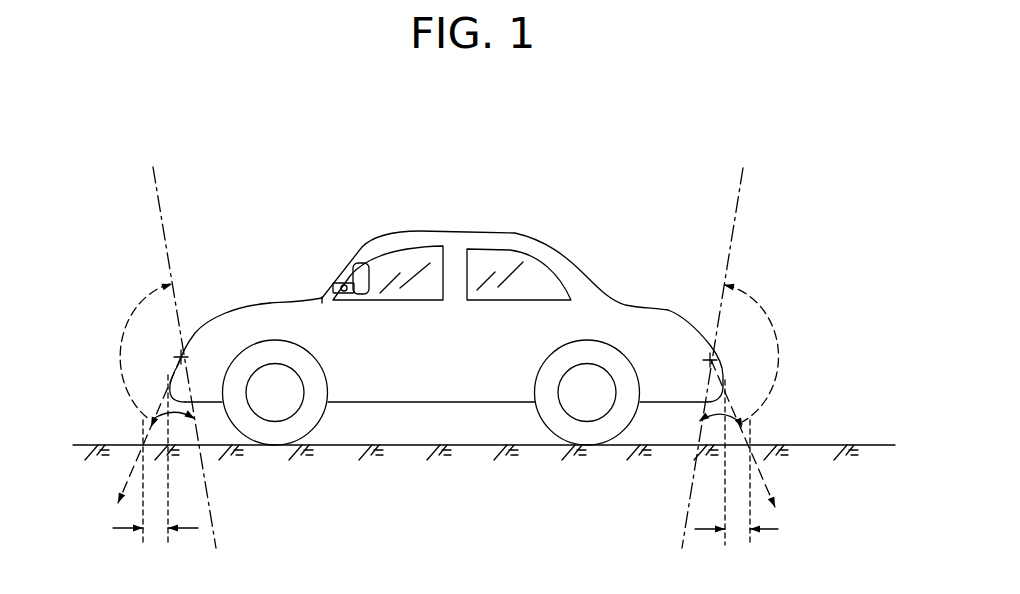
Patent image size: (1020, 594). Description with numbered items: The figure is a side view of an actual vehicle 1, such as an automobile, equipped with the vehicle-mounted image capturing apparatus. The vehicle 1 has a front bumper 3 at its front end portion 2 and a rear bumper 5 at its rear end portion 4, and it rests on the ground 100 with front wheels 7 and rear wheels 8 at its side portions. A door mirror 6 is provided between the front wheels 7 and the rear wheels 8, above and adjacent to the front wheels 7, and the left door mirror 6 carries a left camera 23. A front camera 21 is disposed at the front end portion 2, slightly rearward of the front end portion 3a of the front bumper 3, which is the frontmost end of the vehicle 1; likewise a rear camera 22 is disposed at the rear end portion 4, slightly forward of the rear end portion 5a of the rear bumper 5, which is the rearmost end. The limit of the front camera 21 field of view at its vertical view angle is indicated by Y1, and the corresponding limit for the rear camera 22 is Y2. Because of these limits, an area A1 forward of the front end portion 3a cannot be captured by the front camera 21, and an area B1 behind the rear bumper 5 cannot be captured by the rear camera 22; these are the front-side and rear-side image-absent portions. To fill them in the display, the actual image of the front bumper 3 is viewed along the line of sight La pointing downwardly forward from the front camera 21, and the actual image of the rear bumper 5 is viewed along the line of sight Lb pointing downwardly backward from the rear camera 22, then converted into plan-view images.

The vehicle 1 is at (446, 296).
The front end portion 2 is at (202, 345).
The front bumper 3 is at (180, 359).
The front end portion of the front bumper 3a is at (171, 374).
The rear end portion 4 is at (692, 348).
The rear bumper 5 is at (713, 366).
The rear end portion of the rear bumper 5a is at (727, 378).
The door mirror 6 is at (369, 278).
The front wheel 7 is at (275, 448).
The rear wheel 8 is at (588, 448).
The front camera 21 is at (179, 355).
The rear camera 22 is at (713, 356).
The left camera 23 is at (346, 280).
The ground 100 is at (864, 444).
The limit of the field of view of the front camera Y1 is at (152, 181).
The limit of the field of view of the rear camera Y2 is at (742, 184).
The line of sight arrow of the front camera La is at (128, 480).
The line of sight arrow of the rear camera Lb is at (780, 482).
The front-side image-absent portion A1 is at (155, 474).
The rear-side image-absent portion B1 is at (736, 477).